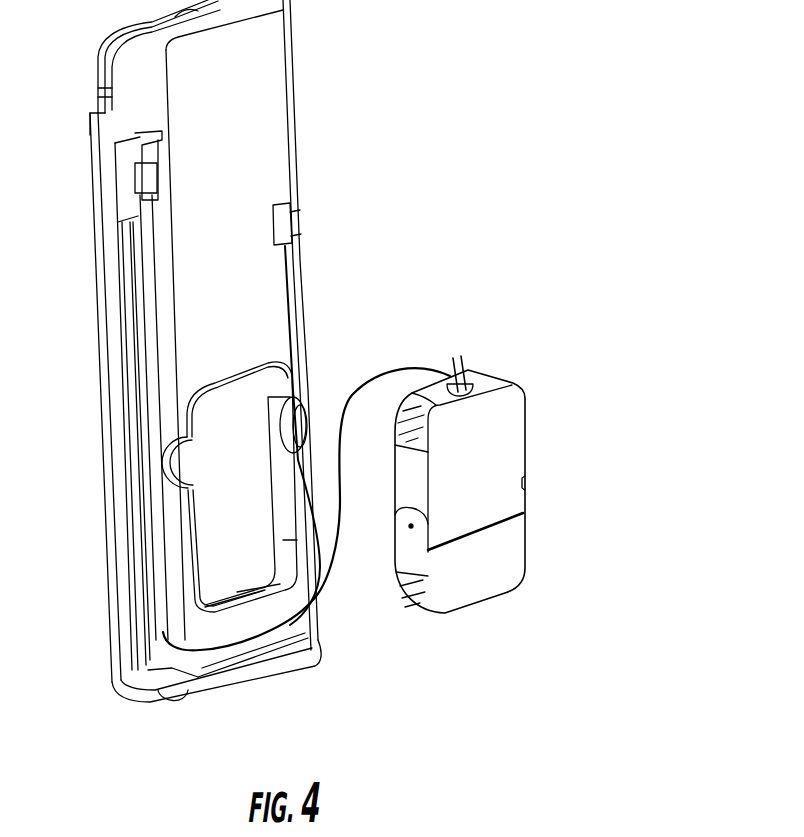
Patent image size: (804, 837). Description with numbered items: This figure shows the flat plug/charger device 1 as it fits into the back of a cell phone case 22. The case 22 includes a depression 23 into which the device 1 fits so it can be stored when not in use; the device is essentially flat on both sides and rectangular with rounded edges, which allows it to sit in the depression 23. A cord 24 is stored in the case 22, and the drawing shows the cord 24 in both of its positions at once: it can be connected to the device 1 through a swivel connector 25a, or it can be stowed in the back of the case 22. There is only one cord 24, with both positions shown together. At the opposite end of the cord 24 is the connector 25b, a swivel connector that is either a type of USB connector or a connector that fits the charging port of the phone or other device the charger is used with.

The device 1 is at (562, 492).
The cell phone case 22 is at (205, 351).
The depression 23 is at (234, 487).
The cord 24 is at (288, 340).
The swivel connector 25a is at (461, 354).
The connector 25b is at (290, 218).